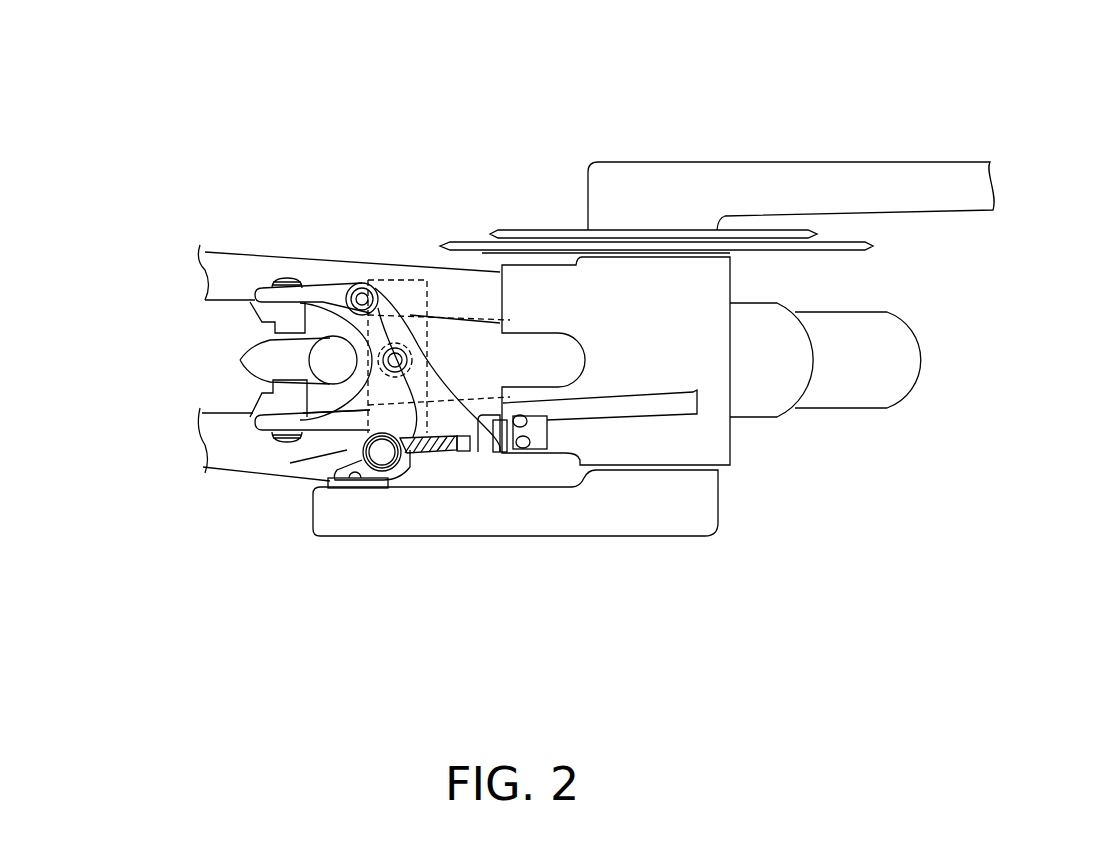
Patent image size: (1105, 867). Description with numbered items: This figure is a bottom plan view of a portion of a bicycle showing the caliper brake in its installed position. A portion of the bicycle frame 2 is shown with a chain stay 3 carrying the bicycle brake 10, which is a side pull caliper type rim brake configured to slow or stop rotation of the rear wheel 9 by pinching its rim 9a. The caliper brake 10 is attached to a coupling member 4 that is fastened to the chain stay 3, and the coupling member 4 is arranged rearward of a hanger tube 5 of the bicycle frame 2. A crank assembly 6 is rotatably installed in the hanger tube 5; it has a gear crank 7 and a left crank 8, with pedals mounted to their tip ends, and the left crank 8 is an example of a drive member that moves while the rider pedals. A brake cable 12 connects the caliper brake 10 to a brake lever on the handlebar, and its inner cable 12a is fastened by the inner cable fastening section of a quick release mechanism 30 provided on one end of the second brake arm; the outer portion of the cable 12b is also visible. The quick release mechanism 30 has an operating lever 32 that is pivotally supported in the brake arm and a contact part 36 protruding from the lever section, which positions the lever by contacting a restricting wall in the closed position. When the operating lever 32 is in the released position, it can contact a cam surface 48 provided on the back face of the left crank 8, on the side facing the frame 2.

The bicycle frame 2 is at (785, 437).
The chain stay 3 is at (235, 253).
The coupling member 4 is at (410, 293).
The hanger tube 5 is at (598, 277).
The crank assembly 6 is at (592, 148).
The gear crank 7 is at (684, 176).
The left crank 8 is at (562, 525).
The rear wheel 9 is at (231, 349).
The rim 9a is at (253, 363).
The bicycle brake 10 is at (317, 277).
The brake cable 12 is at (622, 437).
The inner cable 12a is at (433, 450).
The cable sheath 12b is at (667, 410).
The quick release mechanism 30 is at (300, 470).
The operating lever 32 is at (380, 486).
The contact part 36 is at (340, 470).
The cam surface 48 is at (345, 490).